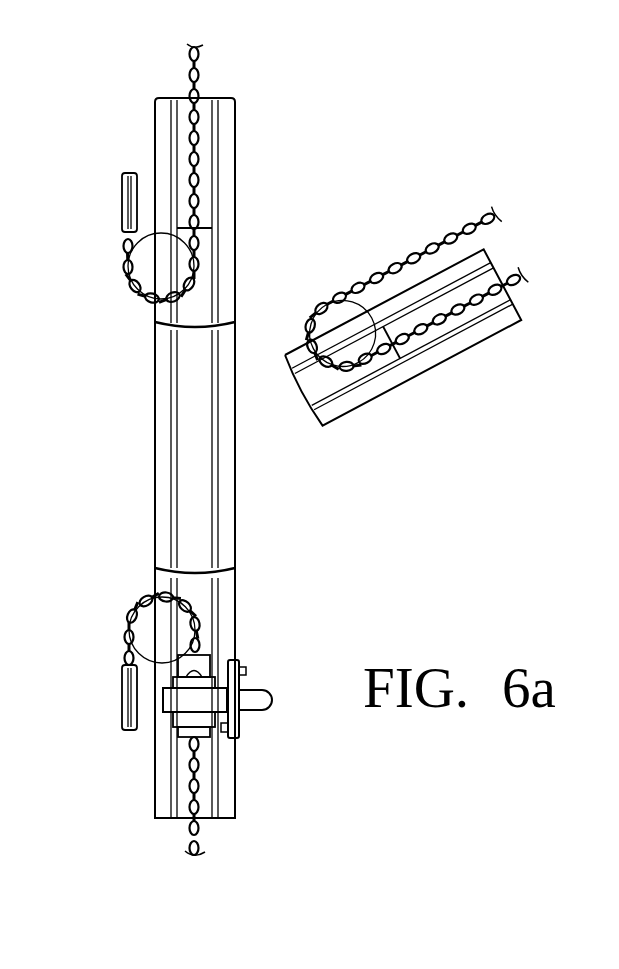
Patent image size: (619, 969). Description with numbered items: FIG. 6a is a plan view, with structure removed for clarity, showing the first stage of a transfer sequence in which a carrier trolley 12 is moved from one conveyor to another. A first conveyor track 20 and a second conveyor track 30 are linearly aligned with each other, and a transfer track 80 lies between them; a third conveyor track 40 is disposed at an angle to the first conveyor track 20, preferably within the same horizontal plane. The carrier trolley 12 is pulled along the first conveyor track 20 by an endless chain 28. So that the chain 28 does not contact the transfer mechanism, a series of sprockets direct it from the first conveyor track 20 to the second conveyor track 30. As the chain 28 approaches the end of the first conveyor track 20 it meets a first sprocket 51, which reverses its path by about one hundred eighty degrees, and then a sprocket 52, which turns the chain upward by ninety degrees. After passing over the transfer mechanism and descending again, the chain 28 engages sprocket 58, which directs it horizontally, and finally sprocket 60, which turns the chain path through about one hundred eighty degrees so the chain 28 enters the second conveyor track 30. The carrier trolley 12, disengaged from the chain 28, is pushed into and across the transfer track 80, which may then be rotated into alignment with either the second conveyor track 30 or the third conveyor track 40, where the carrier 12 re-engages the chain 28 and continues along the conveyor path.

The carrier trolley 12 is at (253, 694).
The first conveyor track 20 is at (155, 790).
The endless chain 28 is at (200, 92).
The second conveyor track 30 is at (160, 134).
The third conveyor track 40 is at (368, 395).
The first sprocket 51 is at (137, 625).
The sprocket 52 is at (122, 715).
The sprocket 58 is at (123, 202).
The sprocket 60 is at (135, 276).
The transfer track 80 is at (160, 473).